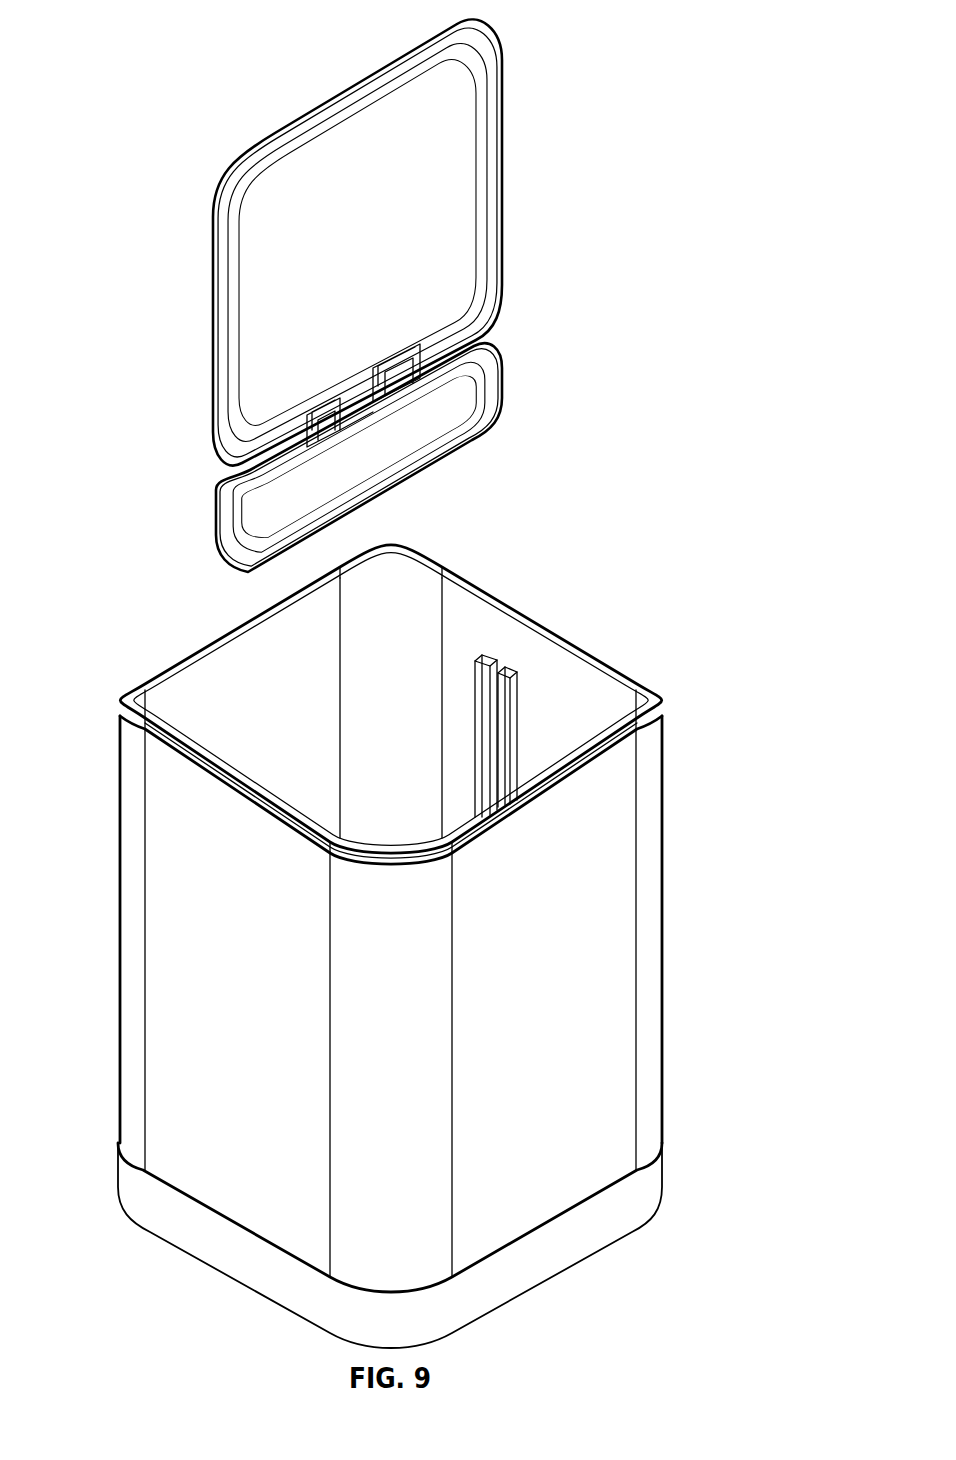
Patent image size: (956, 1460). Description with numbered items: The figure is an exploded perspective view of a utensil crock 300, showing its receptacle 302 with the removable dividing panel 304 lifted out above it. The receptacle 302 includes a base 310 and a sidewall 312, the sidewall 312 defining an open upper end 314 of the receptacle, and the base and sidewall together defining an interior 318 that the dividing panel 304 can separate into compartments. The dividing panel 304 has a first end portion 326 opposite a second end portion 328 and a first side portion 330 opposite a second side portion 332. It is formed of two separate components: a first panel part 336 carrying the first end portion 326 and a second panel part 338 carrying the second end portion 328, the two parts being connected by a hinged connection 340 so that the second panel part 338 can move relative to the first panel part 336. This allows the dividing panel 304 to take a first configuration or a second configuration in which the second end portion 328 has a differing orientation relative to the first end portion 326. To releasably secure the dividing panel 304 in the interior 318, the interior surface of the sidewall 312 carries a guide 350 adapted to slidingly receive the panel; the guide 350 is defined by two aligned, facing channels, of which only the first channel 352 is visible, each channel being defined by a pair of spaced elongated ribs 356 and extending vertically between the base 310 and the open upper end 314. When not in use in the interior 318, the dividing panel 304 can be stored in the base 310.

The utensil crock 300 is at (637, 492).
The receptacle 302 is at (172, 1010).
The dividing panel 304 is at (460, 218).
The base 310 is at (216, 1246).
The sidewall 312 is at (162, 913).
The open upper end 314 is at (202, 660).
The interior 318 is at (463, 598).
The first end portion 326 is at (301, 170).
The second end portion 328 is at (403, 453).
The first side portion 330 is at (463, 143).
The second side portion 332 is at (272, 303).
The first panel part 336 is at (345, 103).
The second panel part 338 is at (460, 410).
The hinged connection 340 is at (377, 335).
The guide 350 is at (516, 700).
The first channel 352 is at (499, 663).
The elongated ribs 356 is at (511, 726).